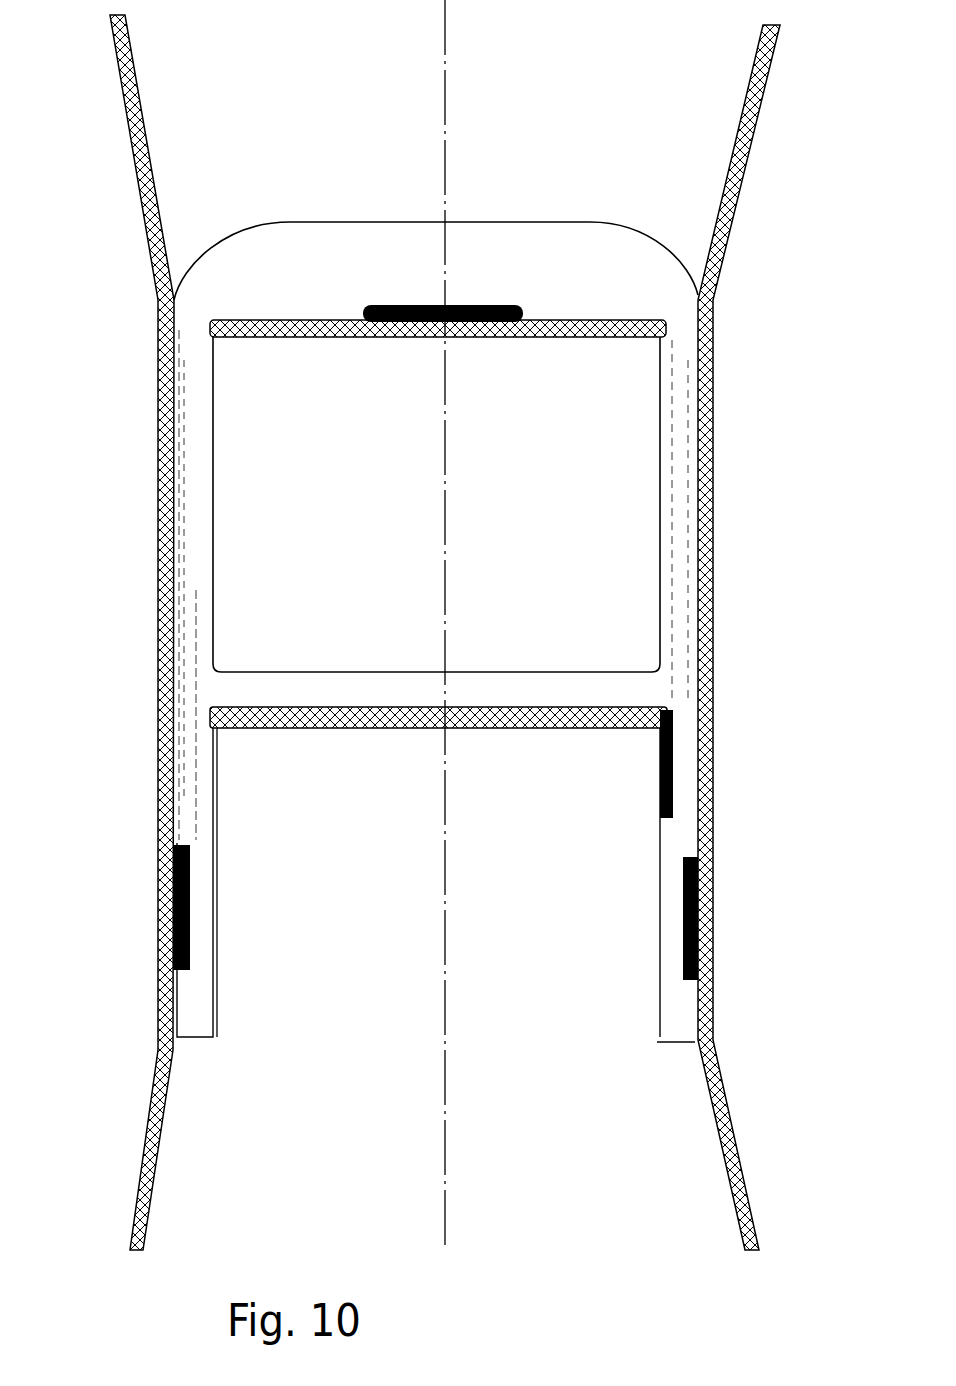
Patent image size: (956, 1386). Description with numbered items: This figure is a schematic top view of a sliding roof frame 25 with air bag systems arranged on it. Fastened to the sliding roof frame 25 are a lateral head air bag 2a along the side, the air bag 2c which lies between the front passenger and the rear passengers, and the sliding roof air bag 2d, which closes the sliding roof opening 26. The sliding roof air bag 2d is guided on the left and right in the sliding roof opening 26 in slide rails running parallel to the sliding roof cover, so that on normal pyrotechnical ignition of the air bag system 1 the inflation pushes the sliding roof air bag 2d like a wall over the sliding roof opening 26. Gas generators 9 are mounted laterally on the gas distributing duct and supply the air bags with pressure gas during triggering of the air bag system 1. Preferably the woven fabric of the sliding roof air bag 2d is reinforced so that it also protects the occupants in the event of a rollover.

The air bag system 1 is at (510, 300).
The lateral head air bag 2a is at (158, 736).
The air bag between the front passenger and the rear passengers 2c is at (310, 729).
The sliding roof air bag 2d is at (548, 340).
The gas generator 9 is at (405, 305).
The sliding roof frame 25 is at (258, 258).
The sliding roof opening 26 is at (565, 530).